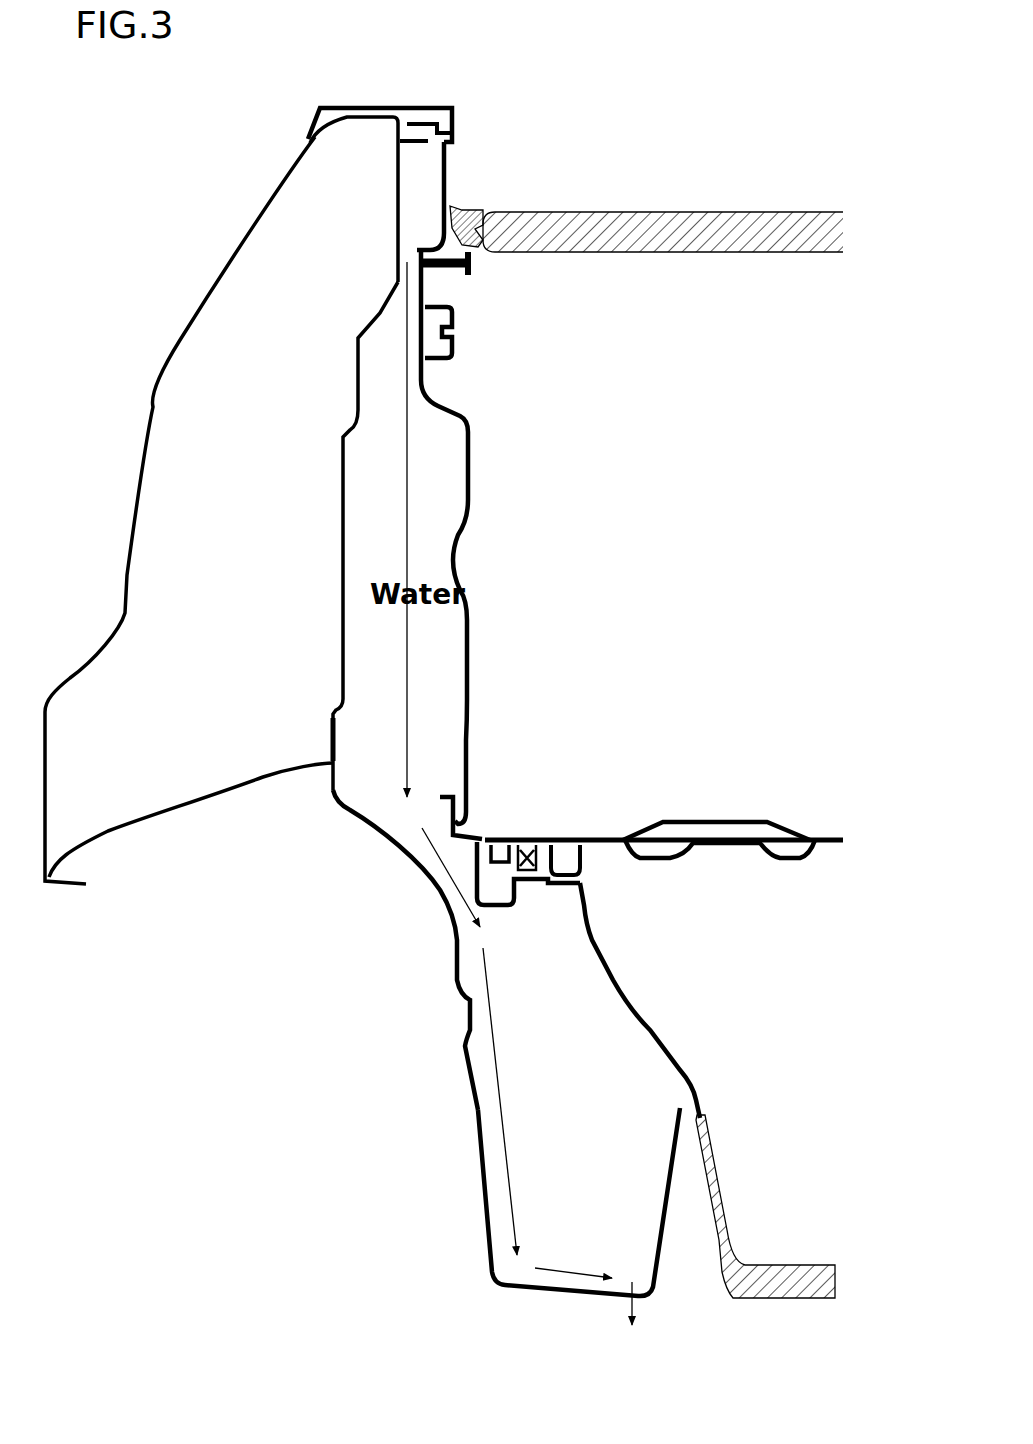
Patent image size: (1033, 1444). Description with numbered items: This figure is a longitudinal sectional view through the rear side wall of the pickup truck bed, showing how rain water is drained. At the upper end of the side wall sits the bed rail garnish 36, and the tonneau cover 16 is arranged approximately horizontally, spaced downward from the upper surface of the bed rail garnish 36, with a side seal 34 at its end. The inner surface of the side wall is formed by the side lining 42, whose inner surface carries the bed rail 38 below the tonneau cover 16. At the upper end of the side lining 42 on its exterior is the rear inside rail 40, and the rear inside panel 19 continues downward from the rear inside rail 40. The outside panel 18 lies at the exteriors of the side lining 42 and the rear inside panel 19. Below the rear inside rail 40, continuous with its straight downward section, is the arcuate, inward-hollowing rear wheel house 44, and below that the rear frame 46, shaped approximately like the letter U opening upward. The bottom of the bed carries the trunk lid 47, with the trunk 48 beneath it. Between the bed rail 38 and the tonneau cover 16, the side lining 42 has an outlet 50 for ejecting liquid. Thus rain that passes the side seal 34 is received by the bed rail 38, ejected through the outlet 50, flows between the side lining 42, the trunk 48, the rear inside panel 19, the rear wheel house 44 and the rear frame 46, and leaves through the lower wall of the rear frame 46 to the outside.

The tonneau cover 16 is at (632, 216).
The outside panel 18 is at (176, 356).
The rear inside panel 19 is at (343, 553).
The side seal 34 is at (478, 207).
The bed rail garnish 36 is at (386, 106).
The bed rail 38 is at (455, 320).
The rear inside rail 40 is at (398, 196).
The side lining 42 is at (462, 554).
The rear wheel house 44 is at (430, 871).
The rear frame 46 is at (480, 1174).
The trunk lid 47 is at (572, 836).
The trunk 48 is at (616, 986).
The outlet 50 is at (416, 258).